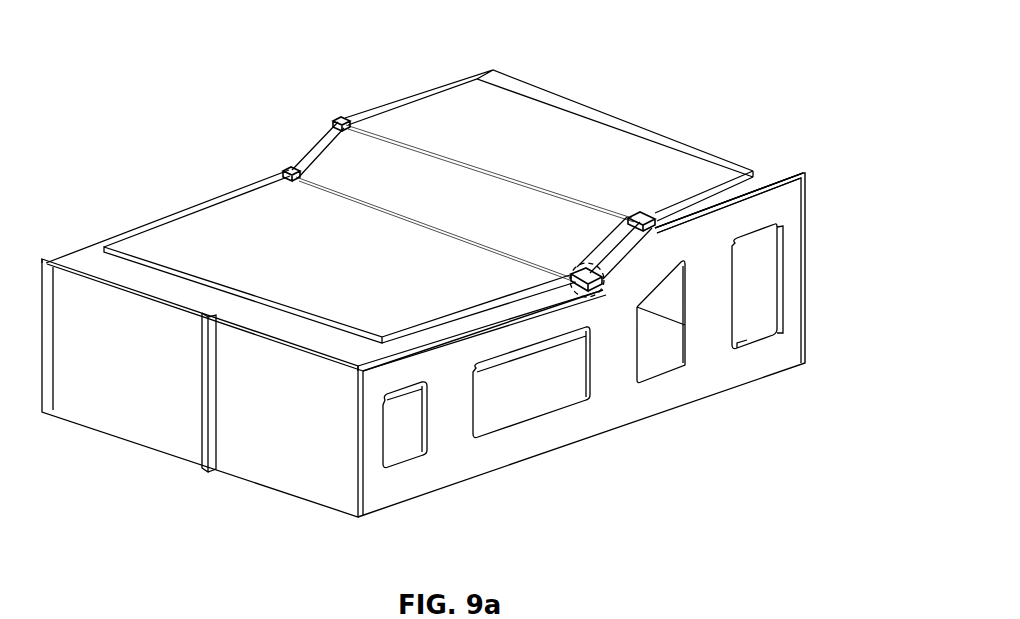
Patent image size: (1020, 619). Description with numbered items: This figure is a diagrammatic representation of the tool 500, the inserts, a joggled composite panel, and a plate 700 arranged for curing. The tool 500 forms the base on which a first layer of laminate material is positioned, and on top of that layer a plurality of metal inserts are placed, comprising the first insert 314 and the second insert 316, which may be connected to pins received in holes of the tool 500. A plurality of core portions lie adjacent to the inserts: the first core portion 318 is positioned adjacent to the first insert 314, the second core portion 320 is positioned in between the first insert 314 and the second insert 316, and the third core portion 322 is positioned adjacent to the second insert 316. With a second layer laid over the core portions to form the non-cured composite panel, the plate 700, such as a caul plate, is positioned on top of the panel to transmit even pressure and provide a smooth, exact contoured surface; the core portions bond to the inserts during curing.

The tool 500 is at (498, 78).
The plate 700 is at (593, 140).
The first insert 314 is at (289, 174).
The second insert 316 is at (339, 120).
The first core portion 318 is at (453, 316).
The second core portion 320 is at (648, 226).
The third core portion 322 is at (745, 192).